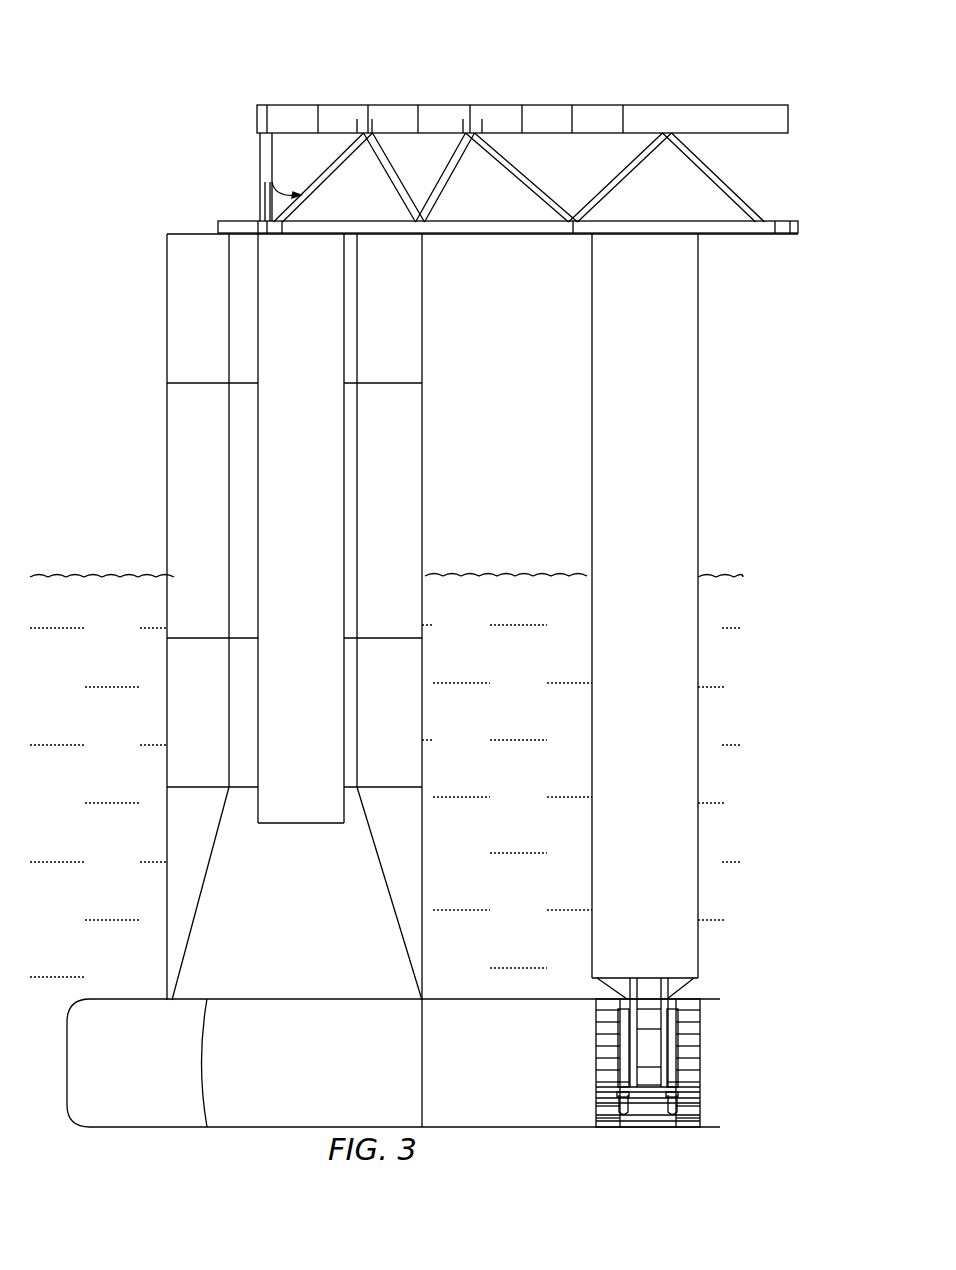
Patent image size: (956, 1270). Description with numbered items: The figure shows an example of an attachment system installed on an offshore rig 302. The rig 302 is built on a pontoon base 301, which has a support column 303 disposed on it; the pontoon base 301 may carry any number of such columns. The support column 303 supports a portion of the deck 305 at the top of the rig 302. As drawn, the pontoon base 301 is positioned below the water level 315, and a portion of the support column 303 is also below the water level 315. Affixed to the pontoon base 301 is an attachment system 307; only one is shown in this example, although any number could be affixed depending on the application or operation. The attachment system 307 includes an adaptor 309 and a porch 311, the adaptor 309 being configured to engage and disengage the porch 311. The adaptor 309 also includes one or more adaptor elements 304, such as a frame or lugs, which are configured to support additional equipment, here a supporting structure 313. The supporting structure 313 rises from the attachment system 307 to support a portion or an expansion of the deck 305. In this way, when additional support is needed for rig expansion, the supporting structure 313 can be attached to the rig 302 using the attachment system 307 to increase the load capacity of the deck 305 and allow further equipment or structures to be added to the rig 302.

The pontoon base 301 is at (294, 1076).
The rig 302 is at (195, 157).
The support column 303 is at (299, 931).
The adaptor elements 304 is at (622, 1066).
The deck 305 is at (695, 113).
The attachment system 307 is at (582, 989).
The adaptor 309 is at (688, 1000).
The porch 311 is at (690, 1101).
The supporting structure 313 is at (663, 696).
The water level 315 is at (717, 577).